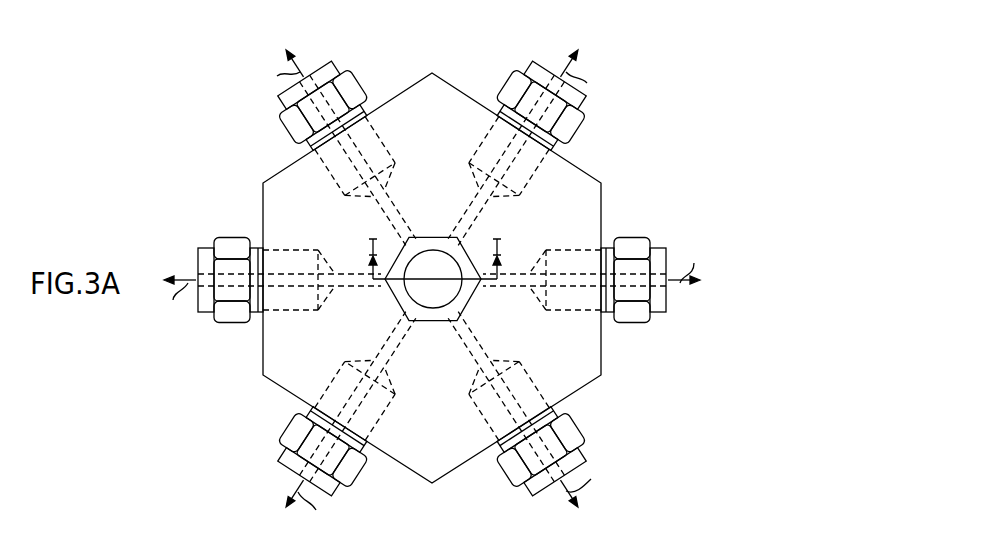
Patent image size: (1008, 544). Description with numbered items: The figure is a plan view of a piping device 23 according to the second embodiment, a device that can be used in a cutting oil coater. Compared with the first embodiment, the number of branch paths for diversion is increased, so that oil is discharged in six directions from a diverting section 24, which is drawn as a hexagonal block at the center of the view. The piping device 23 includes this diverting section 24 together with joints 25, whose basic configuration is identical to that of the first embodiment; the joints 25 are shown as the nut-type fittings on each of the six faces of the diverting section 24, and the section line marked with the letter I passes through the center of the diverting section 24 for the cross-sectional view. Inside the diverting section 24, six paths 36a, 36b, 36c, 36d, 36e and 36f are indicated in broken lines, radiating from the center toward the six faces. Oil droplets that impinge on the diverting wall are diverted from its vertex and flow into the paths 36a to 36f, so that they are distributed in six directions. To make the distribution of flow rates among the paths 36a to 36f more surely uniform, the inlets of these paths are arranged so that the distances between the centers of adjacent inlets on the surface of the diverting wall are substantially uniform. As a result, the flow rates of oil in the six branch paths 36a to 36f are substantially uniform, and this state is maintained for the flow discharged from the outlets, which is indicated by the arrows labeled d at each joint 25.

The piping device 23 is at (640, 99).
The diverting section 24 is at (457, 89).
The joint 25 is at (466, 296).
The path 36a is at (362, 288).
The path 36b is at (398, 335).
The path 36c is at (535, 325).
The path 36d is at (512, 272).
The path 36e is at (468, 228).
The path 36f is at (383, 217).